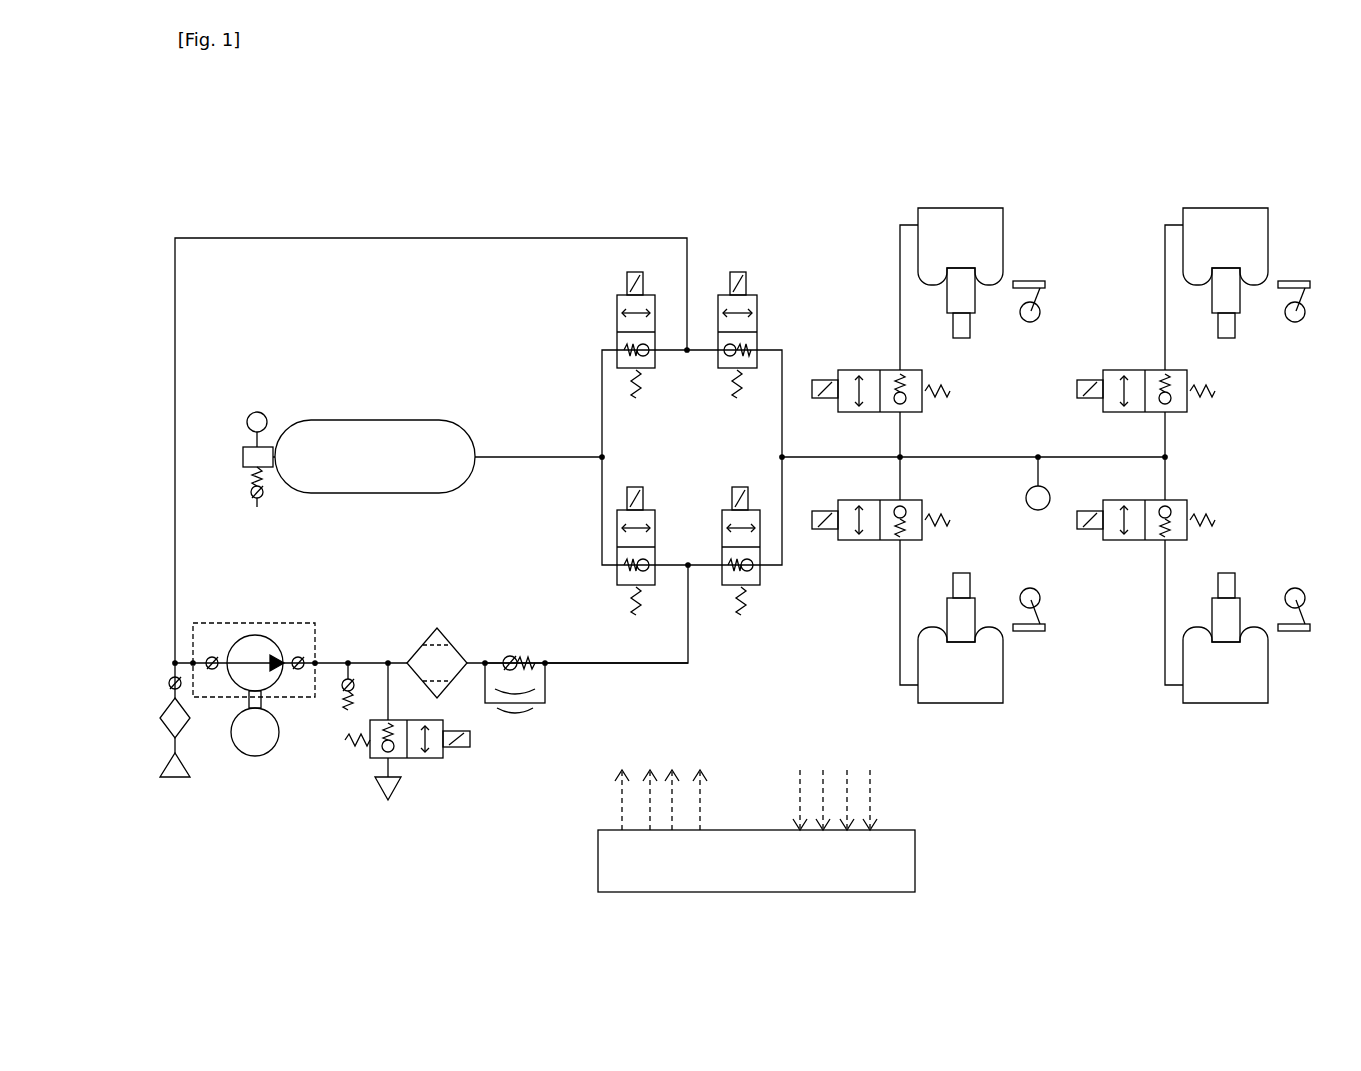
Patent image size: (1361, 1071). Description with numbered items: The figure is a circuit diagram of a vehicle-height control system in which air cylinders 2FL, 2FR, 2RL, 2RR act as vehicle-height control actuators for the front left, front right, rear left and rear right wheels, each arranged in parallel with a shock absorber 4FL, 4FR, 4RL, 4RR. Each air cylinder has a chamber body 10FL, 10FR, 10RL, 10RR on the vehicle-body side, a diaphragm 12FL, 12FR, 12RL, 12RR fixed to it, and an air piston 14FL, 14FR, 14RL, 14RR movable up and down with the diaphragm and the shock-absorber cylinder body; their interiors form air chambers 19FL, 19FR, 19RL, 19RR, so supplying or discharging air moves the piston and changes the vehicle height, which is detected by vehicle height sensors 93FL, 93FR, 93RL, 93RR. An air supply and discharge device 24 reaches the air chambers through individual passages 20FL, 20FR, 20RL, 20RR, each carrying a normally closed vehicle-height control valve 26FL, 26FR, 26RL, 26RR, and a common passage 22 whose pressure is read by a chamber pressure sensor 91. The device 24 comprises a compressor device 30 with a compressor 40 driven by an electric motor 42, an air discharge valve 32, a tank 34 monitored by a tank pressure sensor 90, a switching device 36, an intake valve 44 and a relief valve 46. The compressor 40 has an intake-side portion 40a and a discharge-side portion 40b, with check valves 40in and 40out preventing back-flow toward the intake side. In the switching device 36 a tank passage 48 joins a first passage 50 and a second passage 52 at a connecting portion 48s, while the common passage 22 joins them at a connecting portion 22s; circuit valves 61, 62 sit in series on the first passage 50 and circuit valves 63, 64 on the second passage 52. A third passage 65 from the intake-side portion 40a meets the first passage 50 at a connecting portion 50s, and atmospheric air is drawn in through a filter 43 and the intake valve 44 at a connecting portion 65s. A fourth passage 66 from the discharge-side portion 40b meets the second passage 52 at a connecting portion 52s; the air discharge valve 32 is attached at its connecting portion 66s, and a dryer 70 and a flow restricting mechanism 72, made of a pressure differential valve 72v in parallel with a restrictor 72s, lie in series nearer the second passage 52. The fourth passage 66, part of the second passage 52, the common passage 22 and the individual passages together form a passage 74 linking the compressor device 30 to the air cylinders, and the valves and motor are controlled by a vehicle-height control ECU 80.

The air cylinder 2RL is at (1010, 201).
The air cylinder 2RR is at (1010, 708).
The air cylinder 2FL is at (1307, 186).
The air cylinder 2FR is at (1308, 727).
The shock absorber 4RL is at (972, 327).
The shock absorber 4RR is at (972, 586).
The shock absorber 4FL is at (1256, 333).
The shock absorber 4FR is at (1256, 582).
The chamber body 10RL is at (938, 210).
The chamber body 10RR is at (938, 705).
The chamber body 10FL is at (1199, 232).
The chamber body 10FR is at (1201, 680).
The diaphragm 12RL is at (930, 283).
The diaphragm 12RR is at (930, 628).
The diaphragm 12FL is at (1146, 297).
The diaphragm 12FR is at (1145, 612).
The air piston 14RL is at (955, 300).
The air piston 14RR is at (955, 610).
The air piston 14FL is at (1205, 313).
The air piston 14FR is at (1205, 601).
The air chamber 19RL is at (958, 222).
The air chamber 19RR is at (963, 690).
The air chamber 19FL is at (1224, 183).
The air chamber 19FR is at (1238, 719).
The individual passage 20RL is at (900, 346).
The individual passage 20RR is at (900, 568).
The individual passage 20FL is at (1146, 373).
The individual passage 20FR is at (1146, 541).
The common passage 22 is at (814, 455).
The connecting portion 22s is at (782, 455).
The air supply and discharge device 24 is at (453, 200).
The vehicle-height control valve 26RL is at (922, 406).
The vehicle-height control valve 26RR is at (916, 506).
The vehicle-height control valve 26FL is at (1195, 432).
The vehicle-height control valve 26FR is at (1194, 481).
The compressor device 30 is at (250, 766).
The air discharge valve 32 is at (441, 758).
The tank 34 is at (366, 410).
The switching device 36 is at (705, 250).
The compressor 40 is at (215, 623).
The intake-side portion 40a is at (204, 656).
The discharge-side portion 40b is at (302, 656).
The intake valve 40in is at (208, 672).
The discharge valve 40out is at (300, 672).
The electric motor 42 is at (242, 745).
The filter 43 is at (166, 712).
The intake valve 44 is at (168, 680).
The relief valve 46 is at (342, 686).
The tank passage 48 is at (490, 460).
The connecting portion 48s is at (602, 450).
The first passage 50 is at (602, 378).
The connecting portion 50s is at (687, 353).
The second passage 52 is at (602, 515).
The connecting portion 52s is at (688, 562).
The circuit valve 61 is at (617, 301).
The circuit valve 62 is at (757, 310).
The circuit valve 63 is at (652, 521).
The circuit valve 64 is at (756, 515).
The third passage 65 is at (566, 238).
The connecting portion 65s is at (175, 655).
The fourth passage 66 is at (615, 665).
The connecting portion 66s is at (386, 655).
The dryer 70 is at (433, 638).
The flow restricting mechanism 72 is at (502, 632).
The pressure differential valve 72v is at (513, 655).
The restrictor 72s is at (515, 714).
The passage 74 is at (775, 592).
The vehicle-height control ECU 80 is at (756, 831).
The tank pressure sensor 90 is at (257, 411).
The chamber pressure sensor 91 is at (1026, 498).
The vehicle height sensor 93RL is at (1033, 281).
The vehicle height sensor 93RR is at (1031, 632).
The vehicle height sensor 93FL is at (1310, 279).
The vehicle height sensor 93FR is at (1303, 634).